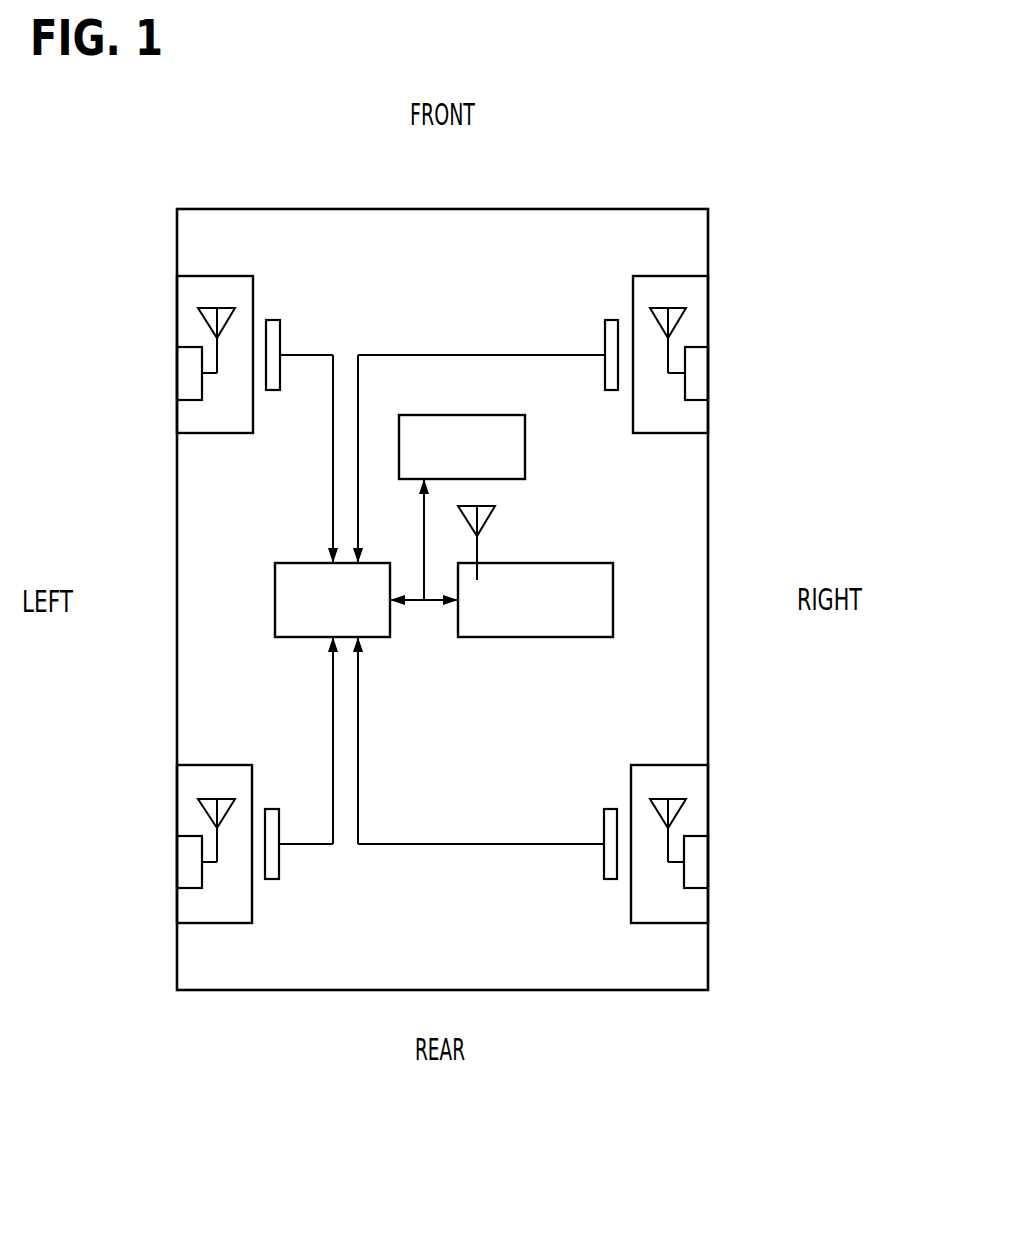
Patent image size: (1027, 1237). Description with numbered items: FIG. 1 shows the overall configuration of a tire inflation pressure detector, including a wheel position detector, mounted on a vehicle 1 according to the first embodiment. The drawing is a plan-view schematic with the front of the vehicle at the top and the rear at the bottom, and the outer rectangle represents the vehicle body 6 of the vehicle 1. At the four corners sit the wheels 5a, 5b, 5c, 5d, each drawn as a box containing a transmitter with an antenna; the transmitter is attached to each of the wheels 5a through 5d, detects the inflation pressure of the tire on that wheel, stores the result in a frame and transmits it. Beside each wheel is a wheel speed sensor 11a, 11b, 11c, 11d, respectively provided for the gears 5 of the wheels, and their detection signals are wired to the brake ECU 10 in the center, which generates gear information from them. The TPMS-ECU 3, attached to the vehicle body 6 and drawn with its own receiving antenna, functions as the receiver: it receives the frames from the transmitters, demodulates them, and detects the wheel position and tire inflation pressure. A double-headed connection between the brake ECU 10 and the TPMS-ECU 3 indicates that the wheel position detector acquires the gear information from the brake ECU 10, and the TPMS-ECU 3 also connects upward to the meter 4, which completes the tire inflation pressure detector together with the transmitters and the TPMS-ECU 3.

The vehicle 1 is at (442, 555).
The TPMS-ECU 3 is at (613, 615).
The meter 4 is at (525, 463).
The gears 5 is at (709, 318).
The wheel 5a is at (709, 340).
The wheel 5b is at (175, 340).
The wheel 5c is at (708, 858).
The wheel 5d is at (174, 858).
The vehicle body 6 is at (635, 208).
The brake ECU 10 is at (275, 600).
The wheel speed sensor 11a is at (612, 390).
The wheel speed sensor 11b is at (272, 390).
The wheel speed sensor 11c is at (611, 809).
The wheel speed sensor 11d is at (272, 809).